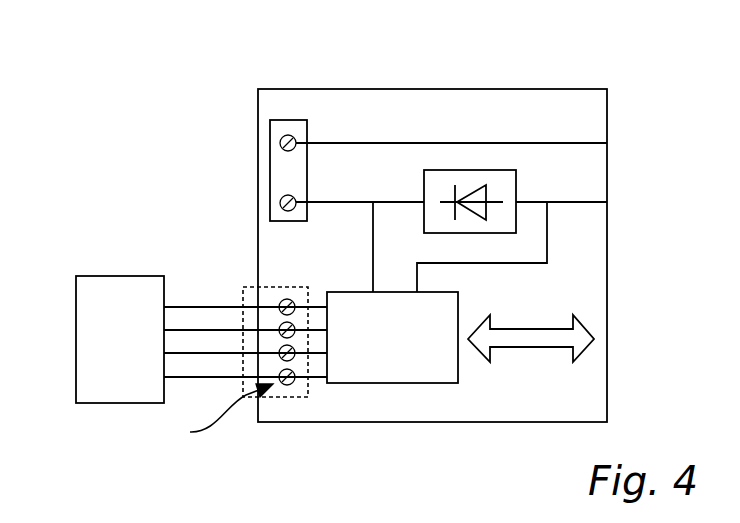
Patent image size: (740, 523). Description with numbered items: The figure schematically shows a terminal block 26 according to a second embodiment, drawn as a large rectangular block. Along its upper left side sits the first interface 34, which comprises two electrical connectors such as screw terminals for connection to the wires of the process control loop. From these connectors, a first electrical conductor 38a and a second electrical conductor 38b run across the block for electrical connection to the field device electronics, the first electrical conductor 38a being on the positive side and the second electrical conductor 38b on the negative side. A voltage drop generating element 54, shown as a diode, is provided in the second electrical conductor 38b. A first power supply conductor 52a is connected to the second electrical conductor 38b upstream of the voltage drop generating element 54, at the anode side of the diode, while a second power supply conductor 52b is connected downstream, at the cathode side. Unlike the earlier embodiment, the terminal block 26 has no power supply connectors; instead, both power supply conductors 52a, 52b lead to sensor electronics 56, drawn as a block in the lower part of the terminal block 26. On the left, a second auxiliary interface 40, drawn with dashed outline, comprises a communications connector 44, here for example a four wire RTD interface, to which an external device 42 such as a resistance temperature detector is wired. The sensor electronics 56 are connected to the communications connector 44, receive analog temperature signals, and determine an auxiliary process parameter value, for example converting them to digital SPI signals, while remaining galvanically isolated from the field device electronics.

The terminal block 26 is at (345, 89).
The first interface 34 is at (270, 151).
The first electrical conductor 38a is at (405, 142).
The second electrical conductor 38b is at (573, 202).
The voltage drop generating element 54 is at (500, 170).
The second power supply conductor 52b is at (373, 238).
The first power supply conductor 52a is at (518, 263).
The sensor electronics 56 is at (374, 383).
The second auxiliary interface 40 is at (243, 290).
The external device 42 is at (92, 343).
The communications connector 44 is at (215, 414).